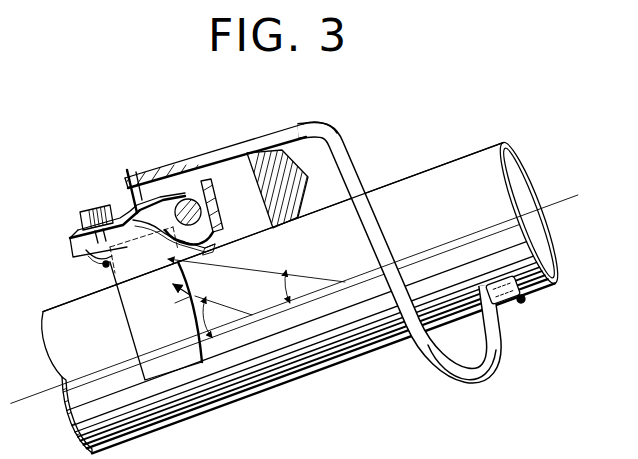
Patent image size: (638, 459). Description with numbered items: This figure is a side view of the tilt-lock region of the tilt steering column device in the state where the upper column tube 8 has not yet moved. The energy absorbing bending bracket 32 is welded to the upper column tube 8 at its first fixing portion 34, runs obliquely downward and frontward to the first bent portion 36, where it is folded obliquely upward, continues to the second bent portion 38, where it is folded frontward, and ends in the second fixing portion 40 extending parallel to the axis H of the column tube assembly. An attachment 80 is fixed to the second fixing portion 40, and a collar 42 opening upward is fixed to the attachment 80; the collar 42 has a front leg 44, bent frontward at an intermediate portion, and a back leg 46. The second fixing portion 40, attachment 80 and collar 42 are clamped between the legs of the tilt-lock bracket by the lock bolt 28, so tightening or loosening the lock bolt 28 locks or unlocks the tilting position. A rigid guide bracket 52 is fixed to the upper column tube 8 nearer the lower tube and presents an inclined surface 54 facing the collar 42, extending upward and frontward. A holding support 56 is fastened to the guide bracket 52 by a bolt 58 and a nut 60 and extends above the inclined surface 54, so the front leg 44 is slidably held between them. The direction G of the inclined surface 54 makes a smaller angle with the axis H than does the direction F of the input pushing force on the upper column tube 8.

The upper column tube 8 is at (285, 374).
The lock bolt 28 is at (195, 150).
The energy absorbing bending bracket 32 is at (350, 190).
The first fixing portion 34 is at (514, 310).
The first bent portion 36 is at (482, 370).
The second bent portion 38 is at (327, 134).
The second fixing portion 40 is at (178, 172).
The collar 42 is at (217, 228).
The front leg 44 is at (168, 198).
The back leg 46 is at (210, 200).
The guide bracket 52 is at (137, 320).
The inclined surface 54 is at (207, 241).
The holding support 56 is at (135, 206).
The bolt 58 is at (84, 208).
The nut 60 is at (93, 268).
The attachment 80 is at (130, 180).
The axis of the column tube assembly H is at (553, 197).
The direction of the input pushing force F is at (176, 300).
The direction of the inclined surface G is at (168, 280).